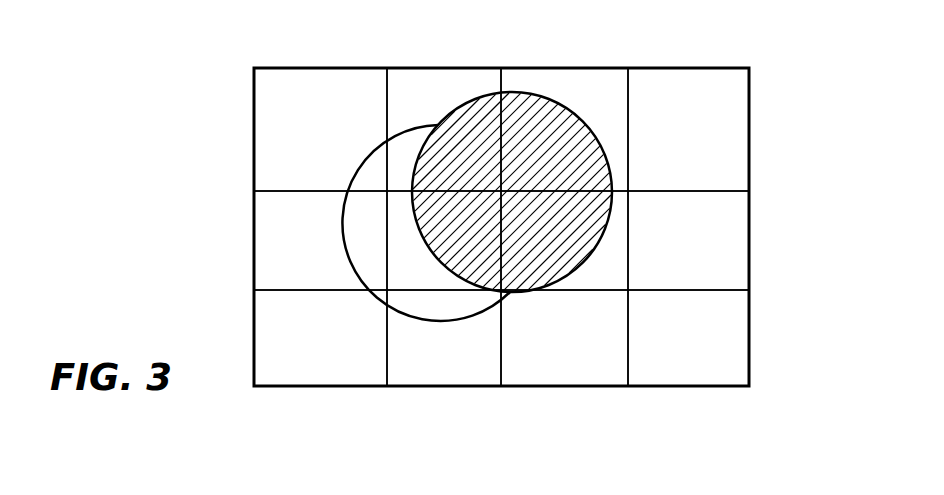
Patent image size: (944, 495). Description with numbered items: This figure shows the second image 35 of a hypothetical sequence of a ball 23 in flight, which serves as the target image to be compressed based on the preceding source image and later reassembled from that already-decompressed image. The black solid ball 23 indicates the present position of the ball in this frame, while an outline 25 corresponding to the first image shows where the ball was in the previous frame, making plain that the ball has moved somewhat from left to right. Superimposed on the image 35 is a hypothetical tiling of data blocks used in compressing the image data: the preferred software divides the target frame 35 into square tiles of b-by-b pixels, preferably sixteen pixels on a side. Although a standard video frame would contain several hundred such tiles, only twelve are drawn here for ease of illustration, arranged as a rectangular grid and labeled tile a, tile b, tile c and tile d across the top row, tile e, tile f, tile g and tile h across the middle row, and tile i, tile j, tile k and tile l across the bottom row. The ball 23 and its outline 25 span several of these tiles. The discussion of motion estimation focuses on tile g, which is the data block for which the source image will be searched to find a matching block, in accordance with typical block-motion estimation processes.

The second image 35 is at (700, 68).
The ball 23 is at (521, 95).
The outline 25 is at (357, 168).
The tile a is at (320, 78).
The tile b is at (455, 78).
The tile c is at (613, 78).
The tile d is at (730, 121).
The tile e is at (268, 264).
The tile f is at (400, 208).
The tile g is at (615, 258).
The tile h is at (738, 217).
The tile i is at (262, 322).
The tile j is at (410, 378).
The tile k is at (556, 378).
The tile l is at (735, 342).